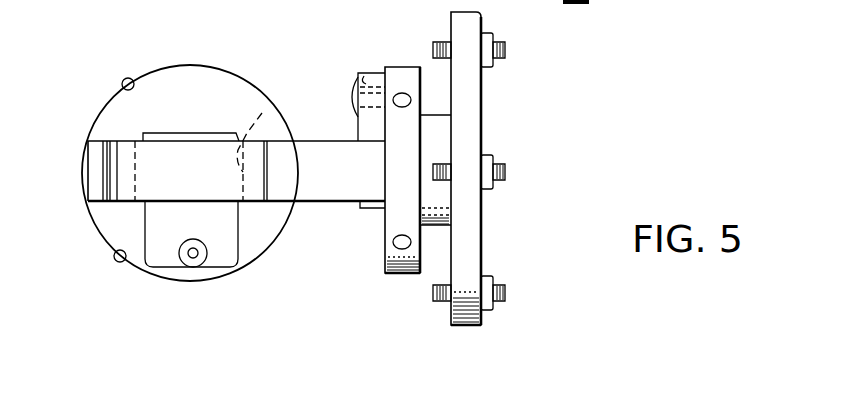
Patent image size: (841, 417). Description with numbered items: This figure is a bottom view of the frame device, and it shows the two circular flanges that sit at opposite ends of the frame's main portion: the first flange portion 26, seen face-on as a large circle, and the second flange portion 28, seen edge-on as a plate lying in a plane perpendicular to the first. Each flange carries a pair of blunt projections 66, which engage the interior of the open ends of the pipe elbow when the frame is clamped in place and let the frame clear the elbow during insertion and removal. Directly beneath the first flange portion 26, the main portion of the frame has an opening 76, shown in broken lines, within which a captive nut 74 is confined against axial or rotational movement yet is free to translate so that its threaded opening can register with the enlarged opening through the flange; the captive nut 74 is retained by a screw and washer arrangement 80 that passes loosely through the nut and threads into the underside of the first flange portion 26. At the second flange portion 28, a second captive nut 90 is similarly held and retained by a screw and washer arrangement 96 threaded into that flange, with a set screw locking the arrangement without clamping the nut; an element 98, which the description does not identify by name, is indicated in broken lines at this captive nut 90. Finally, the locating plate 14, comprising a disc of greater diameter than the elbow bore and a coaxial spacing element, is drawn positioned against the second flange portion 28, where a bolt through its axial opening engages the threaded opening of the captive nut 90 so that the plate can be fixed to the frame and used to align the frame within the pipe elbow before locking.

The locating plate 14 is at (475, 122).
The first flange portion 26 is at (262, 252).
The second flange portion 28 is at (392, 215).
The blunt projections 66 is at (121, 84).
The captive nut 74 is at (177, 137).
The opening 76 is at (262, 113).
The screw and washer arrangement 80 is at (213, 230).
The captive nut 90 is at (372, 76).
The screw and washer arrangement 96 is at (350, 95).
The shoulder 98 is at (364, 78).